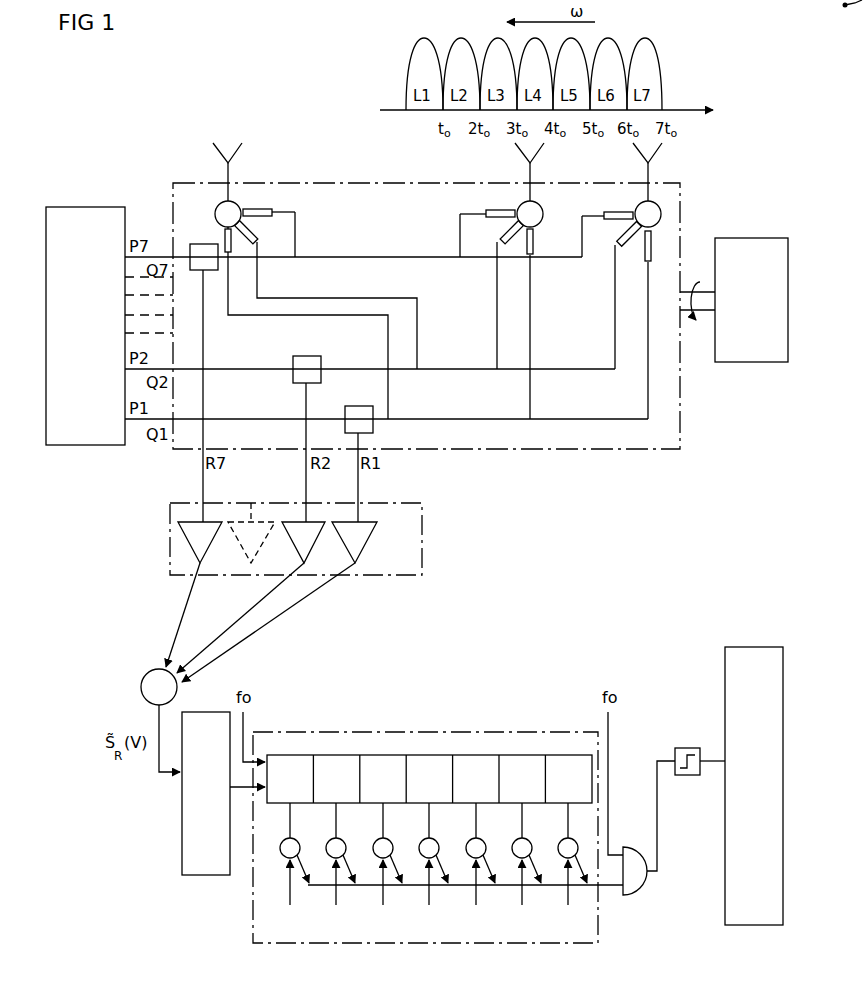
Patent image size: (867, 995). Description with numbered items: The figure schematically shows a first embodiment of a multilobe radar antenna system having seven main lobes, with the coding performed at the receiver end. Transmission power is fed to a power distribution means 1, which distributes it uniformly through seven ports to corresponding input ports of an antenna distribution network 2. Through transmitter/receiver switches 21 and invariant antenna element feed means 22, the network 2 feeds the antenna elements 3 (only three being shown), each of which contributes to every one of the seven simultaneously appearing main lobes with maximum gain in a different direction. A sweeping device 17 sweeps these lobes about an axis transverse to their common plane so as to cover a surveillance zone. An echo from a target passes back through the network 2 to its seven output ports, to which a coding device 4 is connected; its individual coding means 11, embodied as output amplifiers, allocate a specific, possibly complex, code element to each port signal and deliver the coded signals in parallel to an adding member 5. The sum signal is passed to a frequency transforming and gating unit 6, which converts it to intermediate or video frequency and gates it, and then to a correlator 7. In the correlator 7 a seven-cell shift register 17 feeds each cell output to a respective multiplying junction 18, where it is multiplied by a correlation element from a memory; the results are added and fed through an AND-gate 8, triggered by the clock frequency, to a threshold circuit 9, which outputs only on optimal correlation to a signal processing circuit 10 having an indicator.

The power distribution means 1 is at (95, 447).
The antenna distribution network 2 is at (200, 204).
The antenna element 3 is at (240, 153).
The coding device 4 is at (315, 539).
The adding member 5 is at (141, 688).
The frequency transforming and gating unit 6 is at (182, 857).
The correlator 7 is at (400, 860).
The AND-gate 8 is at (633, 898).
The threshold circuit 9 is at (686, 748).
The signal processing circuit 10 is at (750, 647).
The coding means 11 is at (208, 548).
The sweeping device 17 is at (732, 362).
The multiplying junction 18 is at (278, 853).
The transmitter/receiver switch 21 is at (197, 272).
The antenna element feed means 22 is at (458, 238).